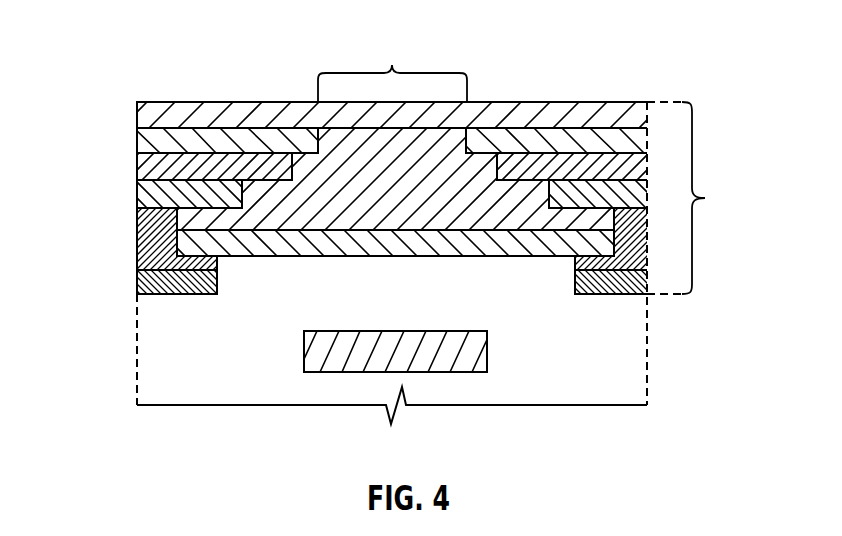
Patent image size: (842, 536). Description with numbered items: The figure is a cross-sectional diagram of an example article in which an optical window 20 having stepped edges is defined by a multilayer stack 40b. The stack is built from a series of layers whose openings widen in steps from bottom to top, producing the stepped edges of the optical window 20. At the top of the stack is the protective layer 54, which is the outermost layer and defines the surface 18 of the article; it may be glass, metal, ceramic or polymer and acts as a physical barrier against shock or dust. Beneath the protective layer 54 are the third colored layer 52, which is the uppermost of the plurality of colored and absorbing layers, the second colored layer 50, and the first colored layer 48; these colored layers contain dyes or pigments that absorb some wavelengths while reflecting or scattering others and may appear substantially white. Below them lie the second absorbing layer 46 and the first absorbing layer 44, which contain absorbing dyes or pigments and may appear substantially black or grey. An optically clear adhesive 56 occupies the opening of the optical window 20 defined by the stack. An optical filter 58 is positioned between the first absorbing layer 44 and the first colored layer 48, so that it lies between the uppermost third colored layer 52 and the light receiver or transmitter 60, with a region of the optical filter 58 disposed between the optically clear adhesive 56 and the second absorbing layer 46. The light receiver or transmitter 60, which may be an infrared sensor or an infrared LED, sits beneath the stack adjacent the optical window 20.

The surface 18 is at (192, 102).
The optical window 20 is at (392, 69).
The multilayer stack 40b is at (701, 198).
The first absorbing layer 44 is at (140, 275).
The second absorbing layer 46 is at (140, 232).
The first colored layer 48 is at (138, 195).
The second colored layer 50 is at (138, 168).
The third colored layer 52 is at (138, 140).
The protective layer 54 is at (138, 110).
The optically clear adhesive 56 is at (408, 197).
The optical filter 58 is at (228, 250).
The light receiver or transmitter 60 is at (332, 374).